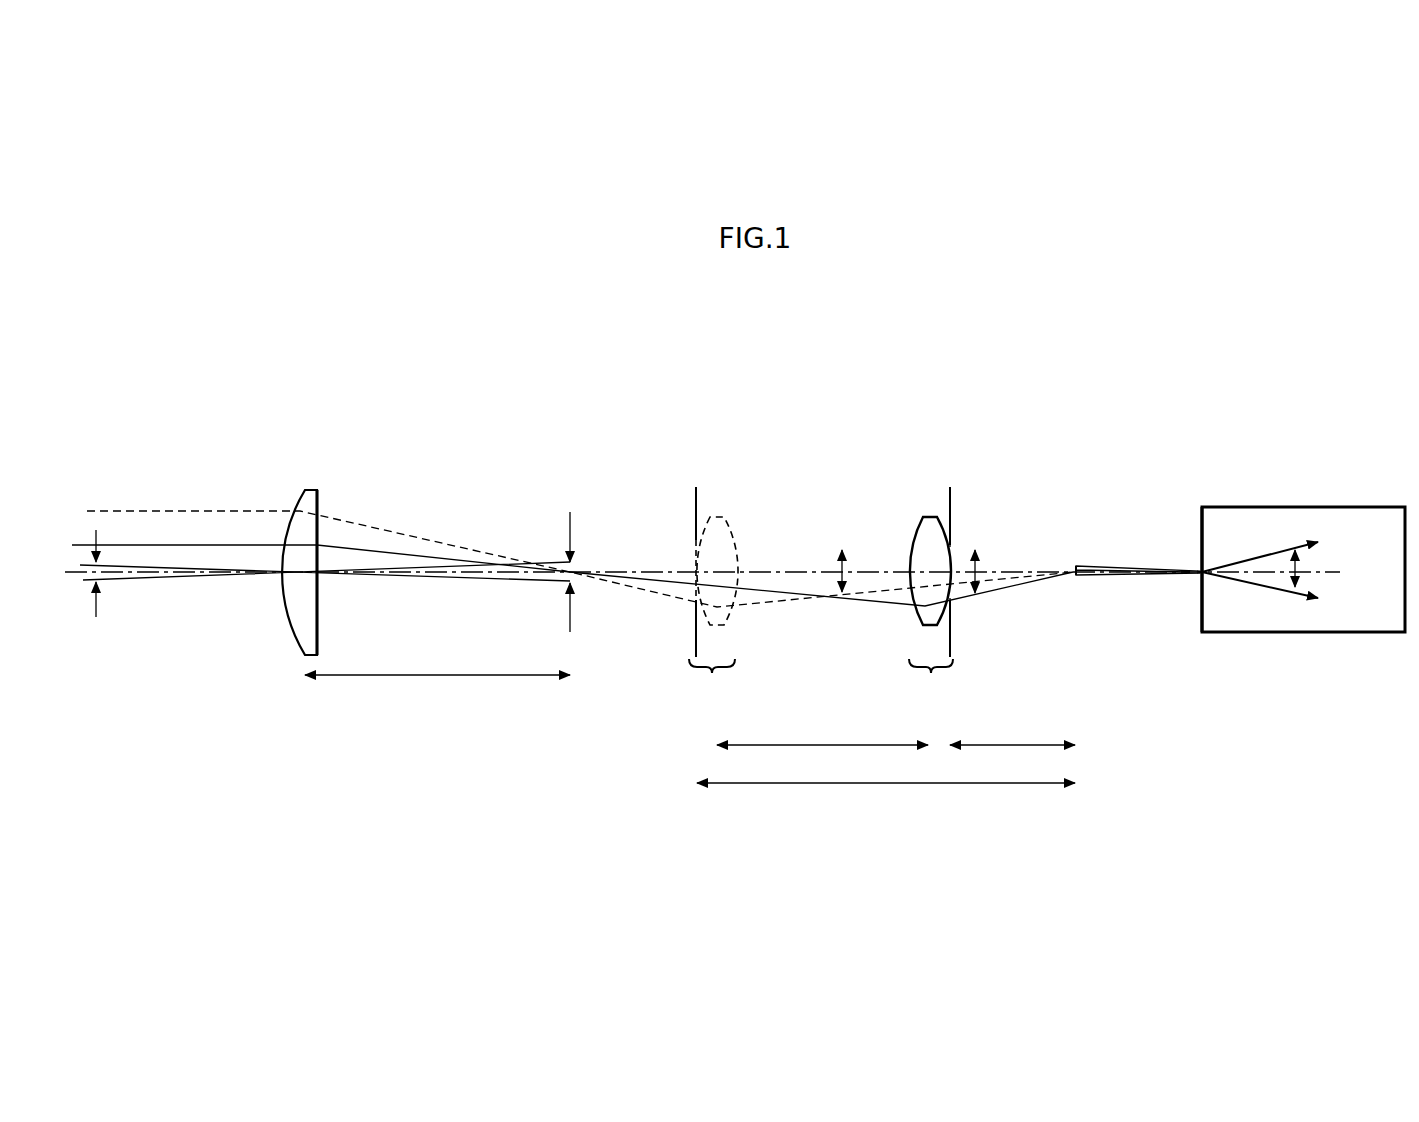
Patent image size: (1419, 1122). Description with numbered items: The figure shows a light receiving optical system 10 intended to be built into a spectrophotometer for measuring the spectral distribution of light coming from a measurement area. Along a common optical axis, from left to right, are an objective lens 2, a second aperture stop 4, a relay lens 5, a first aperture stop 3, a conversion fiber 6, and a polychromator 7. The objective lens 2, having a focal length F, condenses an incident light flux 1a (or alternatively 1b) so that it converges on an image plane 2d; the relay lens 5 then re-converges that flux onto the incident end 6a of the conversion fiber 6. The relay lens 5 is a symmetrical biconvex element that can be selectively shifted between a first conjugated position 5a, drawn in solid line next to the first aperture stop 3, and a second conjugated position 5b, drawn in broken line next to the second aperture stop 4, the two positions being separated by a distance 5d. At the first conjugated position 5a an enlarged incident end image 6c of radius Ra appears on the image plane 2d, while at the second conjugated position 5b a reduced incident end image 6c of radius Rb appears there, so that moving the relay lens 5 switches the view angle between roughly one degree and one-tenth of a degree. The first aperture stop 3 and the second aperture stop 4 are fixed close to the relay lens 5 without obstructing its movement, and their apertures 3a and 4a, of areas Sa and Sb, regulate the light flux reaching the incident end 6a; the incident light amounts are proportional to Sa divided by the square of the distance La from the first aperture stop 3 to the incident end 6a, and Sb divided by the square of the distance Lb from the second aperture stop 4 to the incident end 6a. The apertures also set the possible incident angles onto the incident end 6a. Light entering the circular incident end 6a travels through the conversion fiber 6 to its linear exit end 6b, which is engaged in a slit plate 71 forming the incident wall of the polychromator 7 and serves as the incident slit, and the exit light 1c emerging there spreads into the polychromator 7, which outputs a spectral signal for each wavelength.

The light receiving optical system 10 is at (995, 346).
The incident light flux 1a is at (128, 545).
The incident light flux 1b is at (178, 510).
The exit light 1c is at (1287, 593).
The objective lens 2 is at (305, 503).
The image plane 2d is at (567, 523).
The first aperture stop 3 is at (952, 503).
The aperture 3a is at (956, 547).
The second aperture stop 4 is at (697, 505).
The aperture 4a is at (688, 553).
The relay lens 5 is at (733, 520).
The first conjugated position 5a is at (931, 684).
The second conjugated position 5b is at (712, 684).
The distance 5d is at (822, 728).
The conversion fiber 6 is at (1115, 563).
The incident end 6a is at (1071, 580).
The exit end 6b is at (1197, 579).
The incident end image 6c is at (556, 581).
The polychromator 7 is at (1308, 505).
The slit plate 71 is at (1208, 538).
The focal length F is at (437, 655).
The distance La is at (1012, 728).
The distance Lb is at (886, 767).